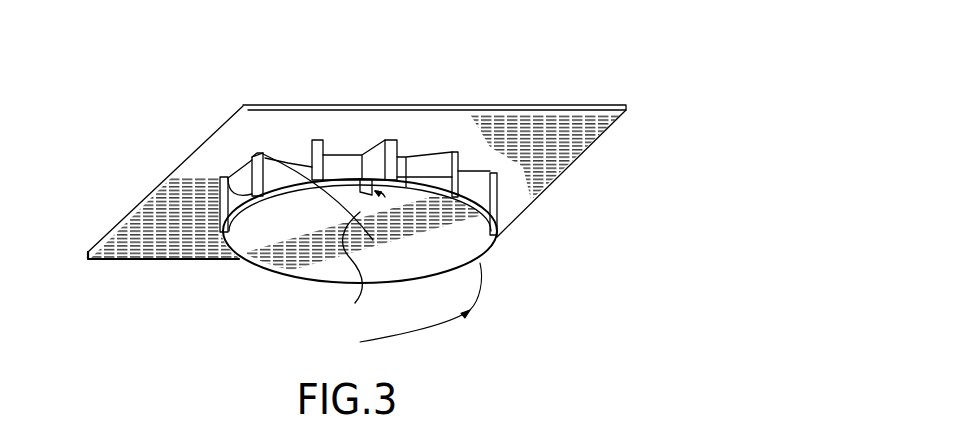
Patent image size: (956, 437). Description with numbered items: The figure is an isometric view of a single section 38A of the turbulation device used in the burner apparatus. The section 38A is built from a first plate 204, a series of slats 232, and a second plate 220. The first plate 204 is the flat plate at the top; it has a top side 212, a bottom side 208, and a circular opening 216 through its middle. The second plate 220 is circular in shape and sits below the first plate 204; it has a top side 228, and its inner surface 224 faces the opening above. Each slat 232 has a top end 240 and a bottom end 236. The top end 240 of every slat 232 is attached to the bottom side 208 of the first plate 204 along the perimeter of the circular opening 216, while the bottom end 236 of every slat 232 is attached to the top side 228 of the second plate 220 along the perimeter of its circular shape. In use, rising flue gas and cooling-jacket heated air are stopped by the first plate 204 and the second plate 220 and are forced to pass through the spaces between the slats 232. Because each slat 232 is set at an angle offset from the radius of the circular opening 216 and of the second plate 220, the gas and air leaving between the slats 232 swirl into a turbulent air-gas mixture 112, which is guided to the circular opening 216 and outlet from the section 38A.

The turbulation device section 38A is at (150, 108).
The turbulent air-gas mixture 112 is at (428, 333).
The first plate 204 is at (207, 163).
The bottom side of first plate 208 is at (517, 187).
The top side of first plate 212 is at (555, 103).
The circular opening 216 is at (405, 160).
The second plate 220 is at (234, 242).
The inner surface 224 is at (285, 243).
The top side of second plate 228 is at (473, 195).
The slats 232 is at (250, 162).
The bottom end of slat 236 is at (390, 207).
The top end of slat 240 is at (443, 148).